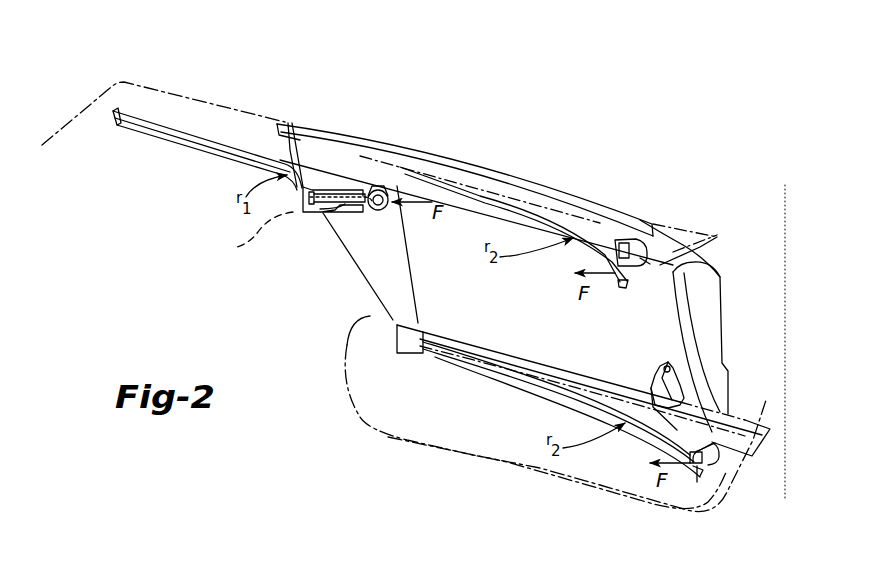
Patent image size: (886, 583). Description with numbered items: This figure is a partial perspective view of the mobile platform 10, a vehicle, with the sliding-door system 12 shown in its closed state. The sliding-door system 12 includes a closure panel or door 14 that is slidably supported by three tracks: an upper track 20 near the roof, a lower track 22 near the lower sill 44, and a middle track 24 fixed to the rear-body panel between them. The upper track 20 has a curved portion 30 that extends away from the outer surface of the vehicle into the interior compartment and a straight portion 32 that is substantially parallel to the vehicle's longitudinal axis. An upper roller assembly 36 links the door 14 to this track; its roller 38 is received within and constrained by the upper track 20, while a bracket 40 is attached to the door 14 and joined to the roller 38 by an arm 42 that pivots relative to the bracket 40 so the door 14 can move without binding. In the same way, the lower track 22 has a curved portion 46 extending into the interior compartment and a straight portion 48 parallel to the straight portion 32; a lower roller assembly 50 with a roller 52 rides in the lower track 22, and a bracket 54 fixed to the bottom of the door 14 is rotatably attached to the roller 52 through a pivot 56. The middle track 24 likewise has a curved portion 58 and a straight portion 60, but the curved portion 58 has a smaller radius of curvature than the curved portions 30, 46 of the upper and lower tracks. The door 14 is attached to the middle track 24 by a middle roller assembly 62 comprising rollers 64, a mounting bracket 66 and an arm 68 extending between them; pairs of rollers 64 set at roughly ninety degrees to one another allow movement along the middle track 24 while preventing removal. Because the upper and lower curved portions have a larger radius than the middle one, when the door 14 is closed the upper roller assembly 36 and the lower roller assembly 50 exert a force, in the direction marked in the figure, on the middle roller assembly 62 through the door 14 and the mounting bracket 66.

The mobile platform 10 is at (360, 420).
The sliding-door system 12 is at (115, 62).
The door 14 is at (722, 280).
The upper track 20 is at (565, 217).
The lower track 22 is at (627, 428).
The middle track 24 is at (167, 128).
The curved portion 30 is at (601, 247).
The straight portion 32 is at (395, 163).
The upper roller assembly 36 is at (636, 278).
The roller 38 is at (621, 286).
The bracket 40 is at (638, 251).
The arm 42 is at (623, 239).
The lower sill 44 is at (746, 426).
The curved portion 46 is at (647, 431).
The straight portion 48 is at (510, 375).
The lower roller assembly 50 is at (713, 470).
The roller 52 is at (682, 480).
The bracket 54 is at (661, 392).
The pivot 56 is at (715, 443).
The curved portion 58 is at (303, 186).
The straight portion 60 is at (135, 128).
The middle roller assembly 62 is at (340, 220).
The rollers 64 is at (253, 236).
The mounting bracket 66 is at (377, 190).
The arm 68 is at (338, 190).